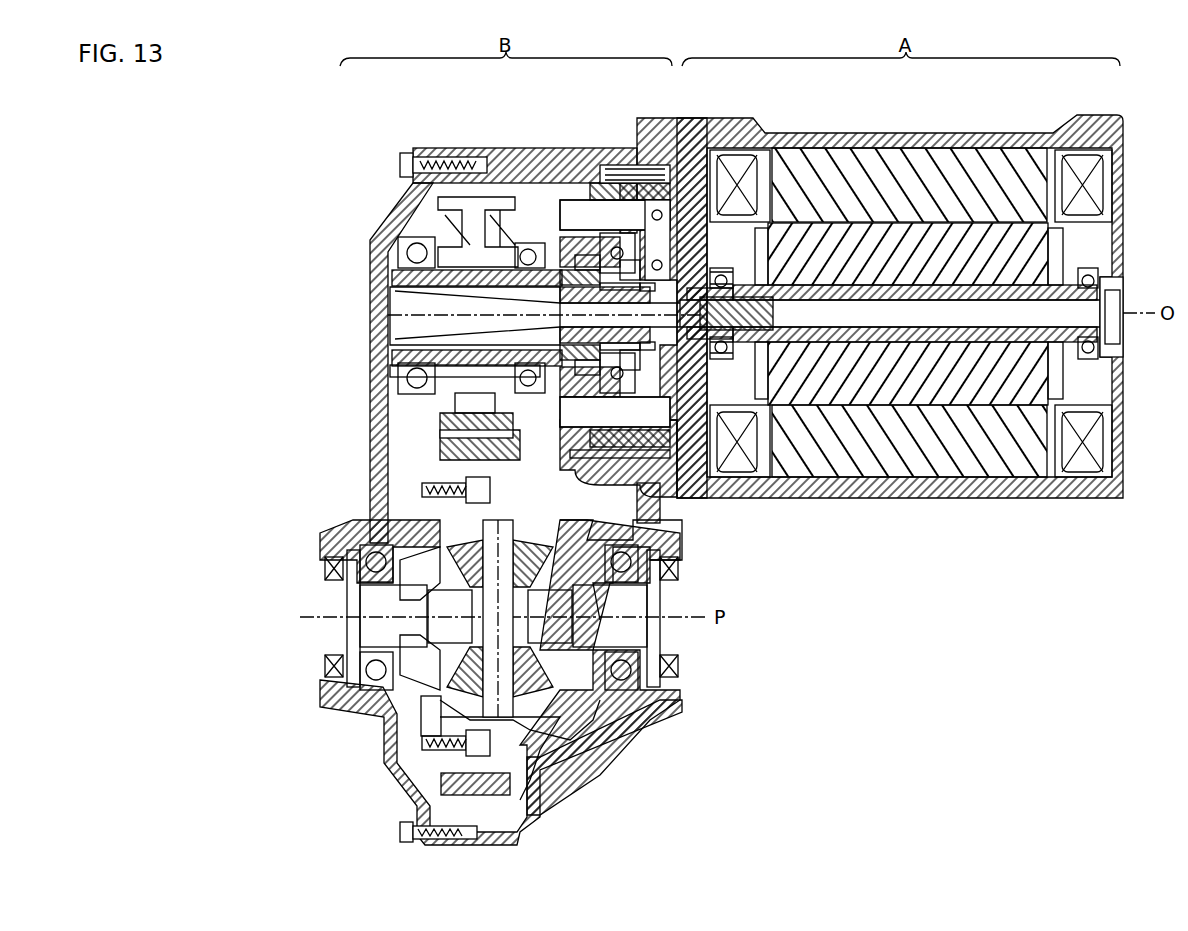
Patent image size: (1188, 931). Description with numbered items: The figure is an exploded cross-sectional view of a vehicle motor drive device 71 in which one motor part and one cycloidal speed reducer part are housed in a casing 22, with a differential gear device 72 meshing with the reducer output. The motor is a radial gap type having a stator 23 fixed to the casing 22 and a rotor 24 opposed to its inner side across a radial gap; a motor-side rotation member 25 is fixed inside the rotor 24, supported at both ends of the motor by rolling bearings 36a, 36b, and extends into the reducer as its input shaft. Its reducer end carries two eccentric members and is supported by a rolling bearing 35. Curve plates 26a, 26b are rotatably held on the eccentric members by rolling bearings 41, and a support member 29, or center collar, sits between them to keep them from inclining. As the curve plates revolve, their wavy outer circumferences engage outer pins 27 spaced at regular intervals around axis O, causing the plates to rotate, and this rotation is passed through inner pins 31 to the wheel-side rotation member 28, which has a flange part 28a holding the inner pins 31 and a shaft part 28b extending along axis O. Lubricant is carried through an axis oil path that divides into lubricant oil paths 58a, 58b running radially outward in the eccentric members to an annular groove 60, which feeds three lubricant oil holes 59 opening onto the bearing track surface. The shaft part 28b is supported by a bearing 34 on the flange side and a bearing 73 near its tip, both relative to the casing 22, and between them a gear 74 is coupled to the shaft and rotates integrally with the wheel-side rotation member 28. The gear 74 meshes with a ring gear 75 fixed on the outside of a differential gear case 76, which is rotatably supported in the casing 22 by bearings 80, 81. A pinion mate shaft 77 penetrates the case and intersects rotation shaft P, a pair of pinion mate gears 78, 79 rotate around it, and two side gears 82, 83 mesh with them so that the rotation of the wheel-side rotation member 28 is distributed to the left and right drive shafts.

The vehicle motor drive device 71 is at (1146, 94).
The casing 22 is at (685, 540).
The stator 23 is at (743, 495).
The rotor 24 is at (840, 380).
The motor-side rotation member 25 is at (930, 400).
The rolling bearing 36a is at (1085, 360).
The rolling bearing 36b is at (775, 478).
The differential gear device 72 is at (404, 527).
The bearing 73 is at (410, 247).
The gear 74 is at (455, 215).
The shaft part 28b is at (430, 276).
The lubricant oil path 58b is at (563, 297).
The lubricant oil path 58a is at (573, 302).
The annular groove 60 is at (645, 330).
The lubricant oil holes 59 is at (647, 340).
The rolling bearing 35 is at (563, 357).
The rolling bearing 41 is at (610, 367).
The inner pins 31 is at (573, 403).
The outer pins 27 is at (560, 477).
The support member 29 is at (630, 190).
The curve plate 26a is at (640, 183).
The curve plate 26b is at (650, 263).
The wheel-side rotation member 28 is at (577, 280).
The flange part 28a is at (587, 273).
The bearing 34 is at (560, 287).
The ring gear 75 is at (455, 447).
The pinion mate gear 78 is at (627, 520).
The bearing 80 is at (320, 704).
The side gear 82 is at (370, 660).
The bearing 81 is at (633, 700).
The side gear 83 is at (608, 703).
The differential gear case 76 is at (583, 722).
The pinion mate shaft 77 is at (535, 740).
The pinion mate gear 79 is at (505, 710).